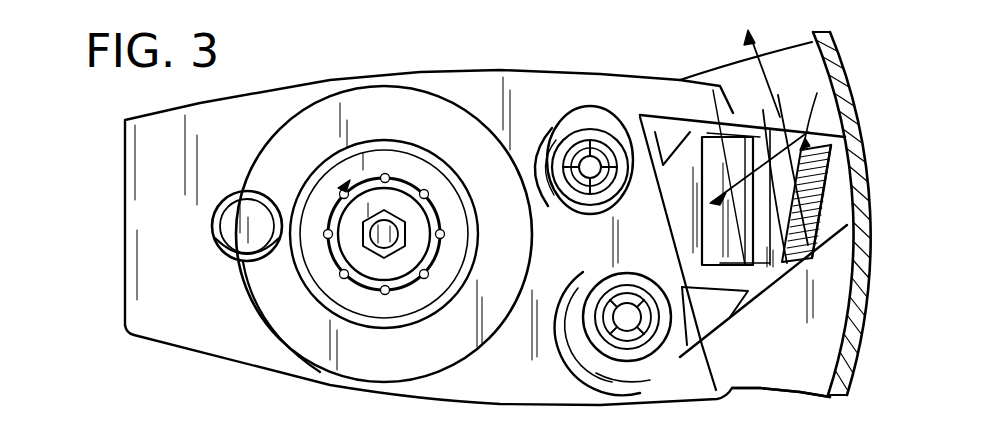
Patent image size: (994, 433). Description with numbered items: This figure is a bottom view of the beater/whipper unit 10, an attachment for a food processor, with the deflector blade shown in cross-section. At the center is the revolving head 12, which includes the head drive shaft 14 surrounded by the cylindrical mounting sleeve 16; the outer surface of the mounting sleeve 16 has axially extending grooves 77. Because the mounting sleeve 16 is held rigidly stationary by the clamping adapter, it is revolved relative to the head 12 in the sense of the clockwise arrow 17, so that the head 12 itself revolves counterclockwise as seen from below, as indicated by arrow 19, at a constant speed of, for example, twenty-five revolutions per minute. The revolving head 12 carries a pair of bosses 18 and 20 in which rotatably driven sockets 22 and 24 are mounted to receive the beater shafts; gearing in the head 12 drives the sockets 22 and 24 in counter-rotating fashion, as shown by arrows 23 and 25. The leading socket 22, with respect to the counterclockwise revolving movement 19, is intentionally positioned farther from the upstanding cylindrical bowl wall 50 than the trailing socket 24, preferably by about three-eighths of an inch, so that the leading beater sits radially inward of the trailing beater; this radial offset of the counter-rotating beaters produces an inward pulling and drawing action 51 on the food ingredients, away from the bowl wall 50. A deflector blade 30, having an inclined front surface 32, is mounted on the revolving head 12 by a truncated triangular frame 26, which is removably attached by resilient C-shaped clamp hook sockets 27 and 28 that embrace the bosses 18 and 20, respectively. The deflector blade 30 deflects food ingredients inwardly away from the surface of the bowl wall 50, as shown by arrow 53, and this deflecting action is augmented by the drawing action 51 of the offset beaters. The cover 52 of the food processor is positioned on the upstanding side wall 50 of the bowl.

The beater/whipper unit 10 is at (98, 358).
The revolving head 12 is at (147, 243).
The head drive shaft 14 is at (337, 273).
The mounting sleeve 16 is at (317, 253).
The clockwise arrow 17 is at (330, 200).
The axially extending grooves 77 is at (421, 191).
The boss 18 is at (611, 133).
The arrow 19 is at (832, 42).
The boss 20 is at (590, 330).
The socket 22 is at (562, 203).
The arrow 23 is at (578, 130).
The socket 24 is at (613, 278).
The arrow 25 is at (650, 343).
The truncated triangular frame 26 is at (782, 285).
The C-shaped clamp hook socket 27 is at (597, 107).
The C-shaped clamp hook socket 28 is at (596, 373).
The deflector blade 30 is at (820, 198).
The inclined front surface 32 is at (803, 150).
The upstanding cylindrical bowl wall 50 is at (860, 306).
The pulling, drawing action arrow 51 is at (737, 173).
The cover 52 is at (817, 337).
The deflecting action arrow 53 is at (822, 113).